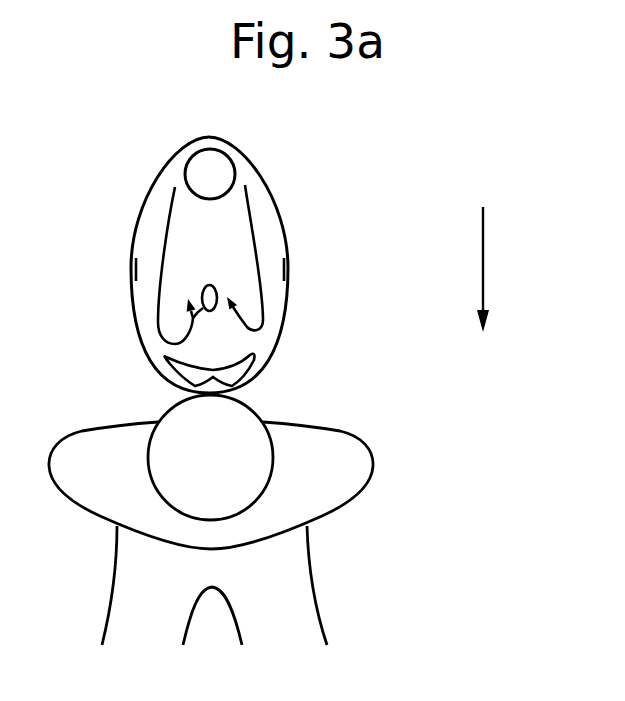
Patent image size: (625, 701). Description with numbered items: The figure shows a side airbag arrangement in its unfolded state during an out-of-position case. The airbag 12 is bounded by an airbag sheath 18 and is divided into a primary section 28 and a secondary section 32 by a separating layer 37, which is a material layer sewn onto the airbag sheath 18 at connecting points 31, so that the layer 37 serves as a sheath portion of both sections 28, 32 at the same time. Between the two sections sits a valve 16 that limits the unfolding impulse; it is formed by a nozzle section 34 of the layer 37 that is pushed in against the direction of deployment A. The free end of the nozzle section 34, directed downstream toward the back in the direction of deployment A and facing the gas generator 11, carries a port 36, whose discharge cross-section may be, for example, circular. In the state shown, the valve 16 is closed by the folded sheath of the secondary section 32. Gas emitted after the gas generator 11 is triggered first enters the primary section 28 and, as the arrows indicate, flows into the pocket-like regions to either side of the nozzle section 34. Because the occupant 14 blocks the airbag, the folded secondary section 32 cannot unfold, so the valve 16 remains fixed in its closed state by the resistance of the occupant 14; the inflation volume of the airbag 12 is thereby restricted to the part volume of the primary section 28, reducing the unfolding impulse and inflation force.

The airbag 12 is at (213, 249).
The gas generator 11 is at (218, 168).
The airbag sheath 18 is at (270, 173).
The primary section 28 is at (243, 238).
The separating layer 37 is at (137, 317).
The nozzle section 34 is at (217, 320).
The valve 16 is at (188, 276).
The port 36 is at (216, 291).
The connecting points 31 is at (137, 268).
The secondary section 32 is at (248, 367).
The occupant 14 is at (73, 418).
The direction of deployment A is at (485, 250).